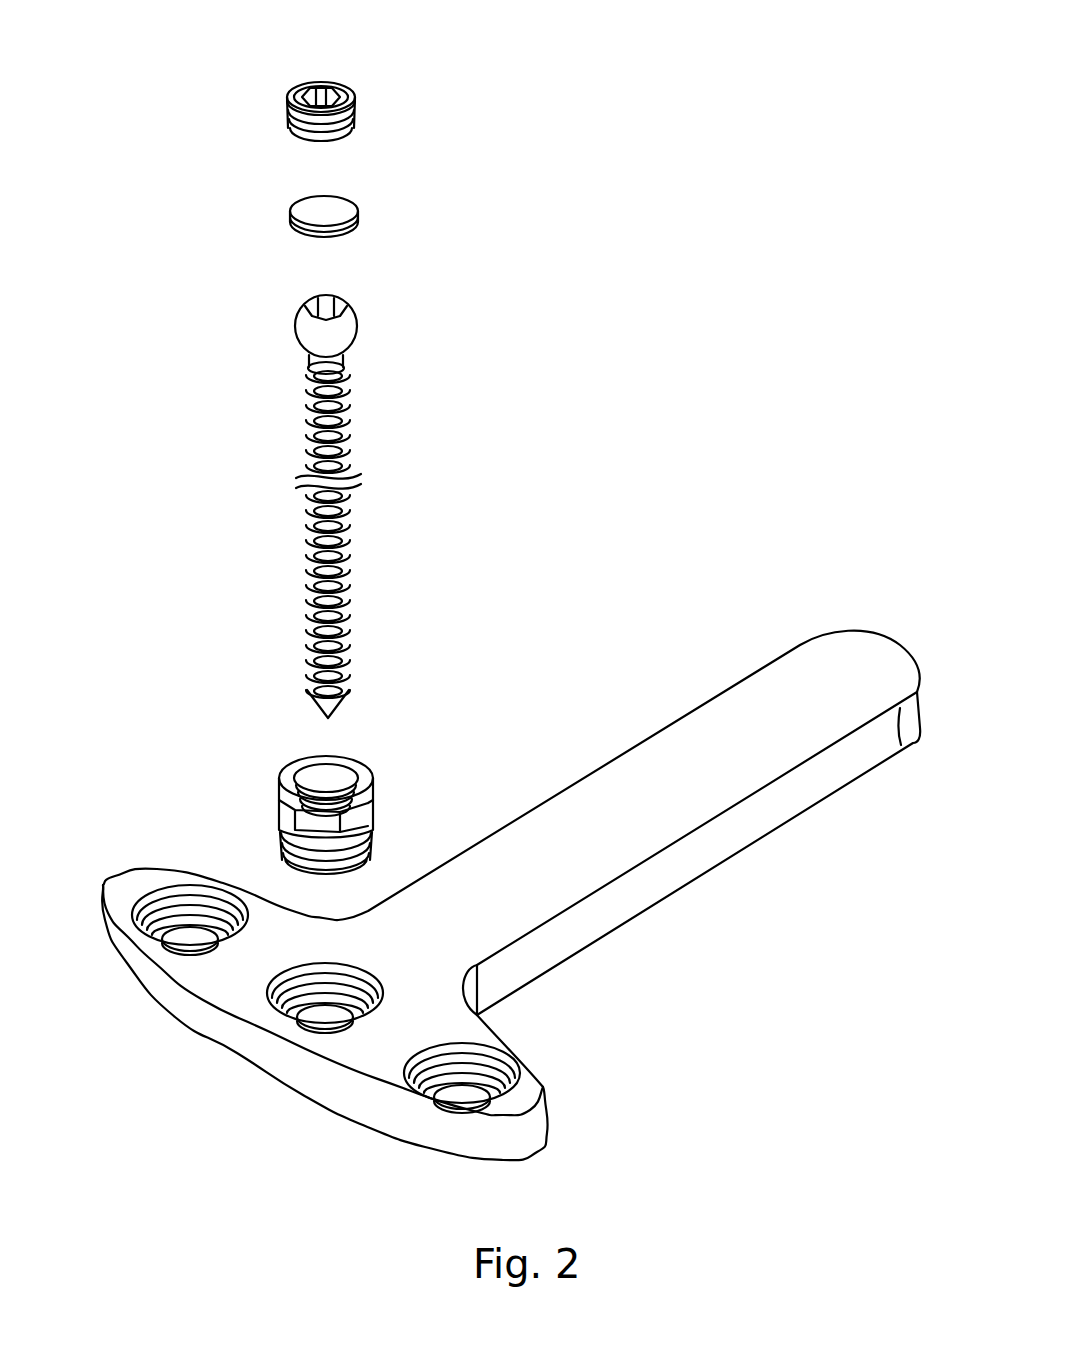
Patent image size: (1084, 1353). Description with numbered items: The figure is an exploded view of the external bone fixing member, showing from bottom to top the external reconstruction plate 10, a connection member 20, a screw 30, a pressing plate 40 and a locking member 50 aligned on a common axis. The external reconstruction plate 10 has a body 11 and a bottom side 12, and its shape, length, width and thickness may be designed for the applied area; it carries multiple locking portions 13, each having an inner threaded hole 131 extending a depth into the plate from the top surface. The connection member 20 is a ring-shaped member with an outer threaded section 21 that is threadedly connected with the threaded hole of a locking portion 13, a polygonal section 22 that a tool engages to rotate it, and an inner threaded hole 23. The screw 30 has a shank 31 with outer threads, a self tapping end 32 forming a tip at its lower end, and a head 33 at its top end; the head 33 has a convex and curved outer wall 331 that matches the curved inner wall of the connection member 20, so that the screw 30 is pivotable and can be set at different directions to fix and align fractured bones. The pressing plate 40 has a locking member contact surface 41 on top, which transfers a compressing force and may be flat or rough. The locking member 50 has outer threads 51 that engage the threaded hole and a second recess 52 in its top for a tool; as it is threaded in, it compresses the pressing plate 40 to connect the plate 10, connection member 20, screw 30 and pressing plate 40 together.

The external reconstruction plate 10 is at (632, 715).
The plate body 11 is at (235, 988).
The plate bottom surface 12 is at (305, 1098).
The locking portion 13 is at (377, 960).
The inner threaded hole 131 is at (300, 960).
The connection member 20 is at (275, 783).
The outer threaded section 21 is at (370, 845).
The polygonal section 22 is at (360, 807).
The inner threaded hole 23 is at (322, 772).
The screw 30 is at (297, 452).
The shank 31 is at (343, 533).
The self tapping end 32 is at (318, 710).
The head 33 is at (292, 313).
The convex and curved outer wall 331 is at (340, 338).
The pressing plate 40 is at (288, 202).
The locking member contact surface 41 is at (338, 213).
The locking member 50 is at (300, 82).
The outer threads 51 is at (353, 105).
The second recess 52 is at (328, 92).